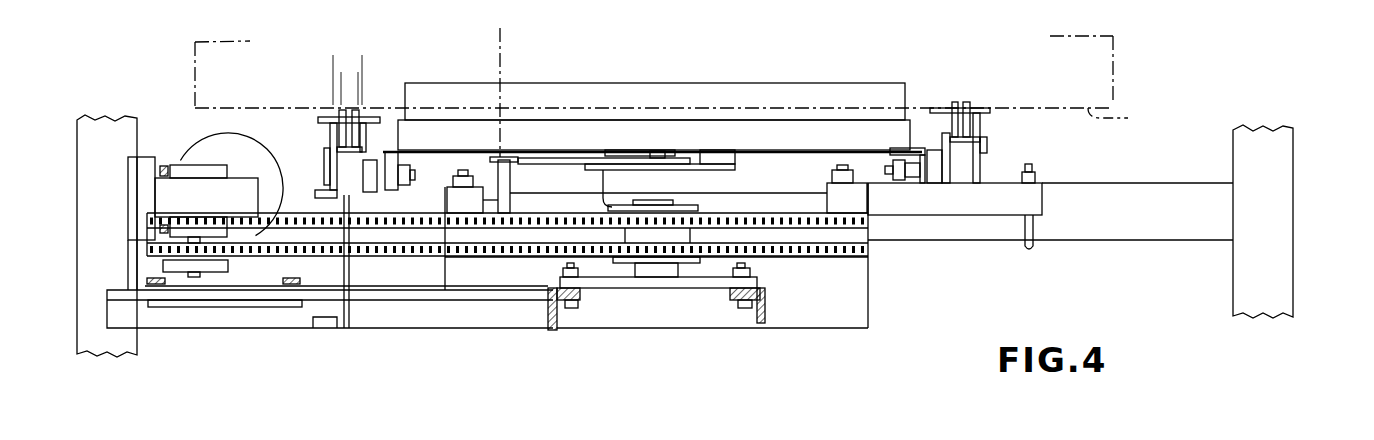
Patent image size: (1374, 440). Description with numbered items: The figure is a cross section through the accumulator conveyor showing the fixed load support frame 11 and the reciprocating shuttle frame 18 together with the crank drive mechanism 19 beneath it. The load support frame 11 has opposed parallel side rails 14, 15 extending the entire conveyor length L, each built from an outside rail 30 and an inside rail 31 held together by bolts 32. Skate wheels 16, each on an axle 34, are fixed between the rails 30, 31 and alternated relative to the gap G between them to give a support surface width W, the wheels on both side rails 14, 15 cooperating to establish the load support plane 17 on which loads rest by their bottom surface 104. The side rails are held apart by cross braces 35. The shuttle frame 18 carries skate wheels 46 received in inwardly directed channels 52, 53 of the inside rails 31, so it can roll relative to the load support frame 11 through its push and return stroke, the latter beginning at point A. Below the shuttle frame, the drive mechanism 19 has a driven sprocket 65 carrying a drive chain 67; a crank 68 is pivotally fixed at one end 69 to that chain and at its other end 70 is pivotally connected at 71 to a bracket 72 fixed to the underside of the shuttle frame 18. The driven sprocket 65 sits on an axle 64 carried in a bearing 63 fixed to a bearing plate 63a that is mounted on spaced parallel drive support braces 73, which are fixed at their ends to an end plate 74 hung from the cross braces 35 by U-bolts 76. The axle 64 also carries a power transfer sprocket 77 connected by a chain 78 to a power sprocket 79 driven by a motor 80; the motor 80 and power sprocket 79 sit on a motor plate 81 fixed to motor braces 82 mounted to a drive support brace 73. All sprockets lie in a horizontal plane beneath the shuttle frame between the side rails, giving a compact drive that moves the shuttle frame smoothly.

The load support frame 11 is at (1290, 196).
The side rail 14 is at (322, 153).
The side rail 15 is at (993, 146).
The skate wheels 16 is at (346, 105).
The load support plane 17 is at (1119, 118).
The shuttle frame 18 is at (914, 112).
The crank drive mechanism 19 is at (408, 360).
The outside rail 30 is at (330, 173).
The inside rail 31 is at (350, 195).
The bolts 32 is at (989, 142).
The axle 34 is at (983, 118).
The cross braces 35 is at (1156, 240).
The skate wheels 46 is at (395, 157).
The channel 52 is at (368, 193).
The channel 53 is at (912, 133).
The bearing 63 is at (665, 203).
The bearing plate 63a is at (665, 282).
The axle 64 is at (648, 270).
The driven sprocket 65 is at (612, 200).
The drive chain 67 is at (773, 213).
The crank 68 is at (550, 158).
The end of crank 69 is at (506, 158).
The other end of crank 70 is at (672, 163).
The pivotal connection 71 is at (658, 150).
The bracket 72 is at (700, 165).
The drive support braces 73 is at (563, 312).
The end plate 74 is at (875, 312).
The U-bolts 76 is at (1035, 226).
The power transfer sprocket 77 is at (698, 258).
The chain 78 is at (385, 262).
The power sprocket 79 is at (210, 262).
The motor 80 is at (218, 150).
The motor plate 81 is at (183, 288).
The motor braces 82 is at (375, 318).
The bottom surface of load 104 is at (1095, 96).
The stroke point A is at (490, 89).
The gap G is at (376, 62).
The support surface width W is at (374, 79).
The conveyor length L is at (1123, 54).